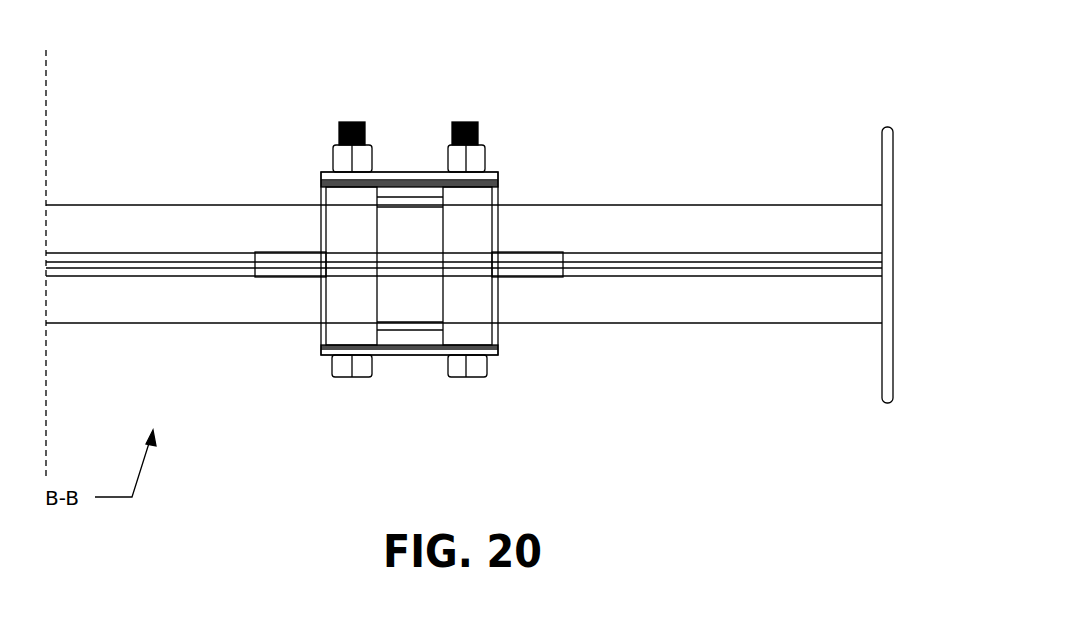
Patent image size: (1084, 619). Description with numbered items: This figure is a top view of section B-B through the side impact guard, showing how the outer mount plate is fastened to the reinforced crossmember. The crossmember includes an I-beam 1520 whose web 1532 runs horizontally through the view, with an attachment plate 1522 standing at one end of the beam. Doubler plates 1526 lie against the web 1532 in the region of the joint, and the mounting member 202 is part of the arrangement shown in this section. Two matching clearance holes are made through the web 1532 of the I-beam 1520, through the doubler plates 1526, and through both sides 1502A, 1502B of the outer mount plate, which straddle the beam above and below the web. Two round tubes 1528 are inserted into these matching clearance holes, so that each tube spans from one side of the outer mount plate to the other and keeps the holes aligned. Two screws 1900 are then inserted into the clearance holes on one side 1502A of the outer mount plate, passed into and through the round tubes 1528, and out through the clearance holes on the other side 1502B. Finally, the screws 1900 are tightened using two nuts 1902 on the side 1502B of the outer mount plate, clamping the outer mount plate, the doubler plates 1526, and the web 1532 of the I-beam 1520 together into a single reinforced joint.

The frame member 202 is at (692, 325).
The I-beam 1520 is at (702, 205).
The attachment plate 1522 is at (893, 156).
The doubler plate 1526 is at (275, 253).
The round tube 1528 is at (326, 170).
The web 1532 is at (148, 268).
The side of outer mount plate 1502A is at (410, 355).
The side of outer mount plate 1502B is at (410, 172).
The screw 1900 is at (347, 375).
The nut 1902 is at (331, 152).